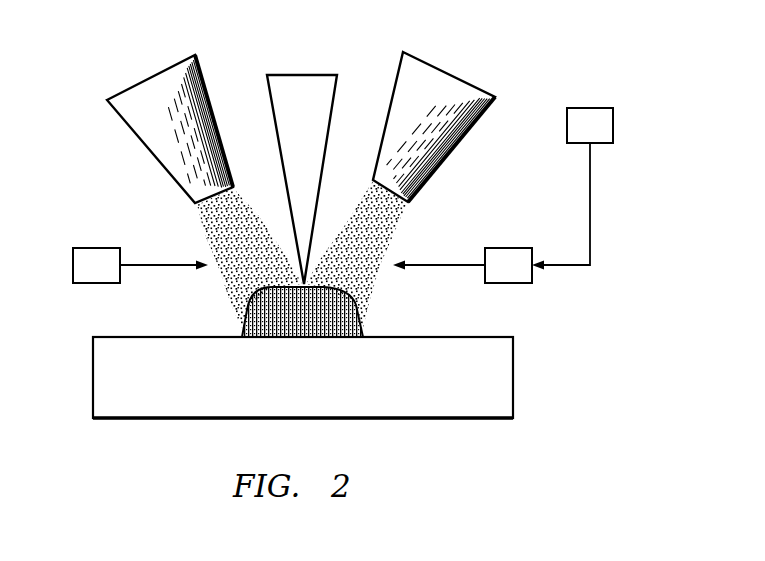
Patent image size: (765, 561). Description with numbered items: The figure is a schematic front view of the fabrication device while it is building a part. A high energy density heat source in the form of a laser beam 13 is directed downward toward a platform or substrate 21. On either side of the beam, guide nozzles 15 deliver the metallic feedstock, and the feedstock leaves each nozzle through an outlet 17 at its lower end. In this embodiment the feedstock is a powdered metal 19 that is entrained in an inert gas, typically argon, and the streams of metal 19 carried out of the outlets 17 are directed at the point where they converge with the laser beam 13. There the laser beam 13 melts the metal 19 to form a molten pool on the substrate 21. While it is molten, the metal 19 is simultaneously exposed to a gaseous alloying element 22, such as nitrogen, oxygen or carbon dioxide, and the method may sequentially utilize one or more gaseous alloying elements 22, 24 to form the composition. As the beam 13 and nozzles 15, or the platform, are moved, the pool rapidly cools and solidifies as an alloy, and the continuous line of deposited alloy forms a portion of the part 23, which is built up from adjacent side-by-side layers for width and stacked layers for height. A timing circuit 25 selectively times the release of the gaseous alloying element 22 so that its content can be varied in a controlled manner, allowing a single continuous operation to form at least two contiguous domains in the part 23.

The laser beam 13 is at (285, 88).
The guide nozzle 15 is at (450, 129).
The outlet 17 is at (193, 204).
The powdered metal 19 is at (373, 280).
The substrate 21 is at (515, 370).
The gaseous alloying element 22 is at (462, 265).
The part 23 is at (242, 313).
The gaseous alloying element 24 is at (140, 265).
The timing circuit 25 is at (572, 189).